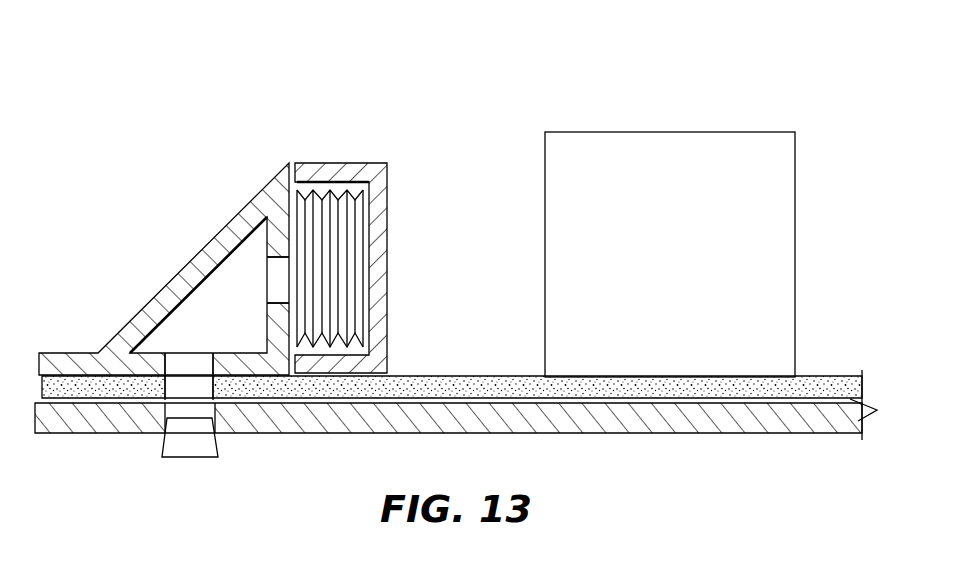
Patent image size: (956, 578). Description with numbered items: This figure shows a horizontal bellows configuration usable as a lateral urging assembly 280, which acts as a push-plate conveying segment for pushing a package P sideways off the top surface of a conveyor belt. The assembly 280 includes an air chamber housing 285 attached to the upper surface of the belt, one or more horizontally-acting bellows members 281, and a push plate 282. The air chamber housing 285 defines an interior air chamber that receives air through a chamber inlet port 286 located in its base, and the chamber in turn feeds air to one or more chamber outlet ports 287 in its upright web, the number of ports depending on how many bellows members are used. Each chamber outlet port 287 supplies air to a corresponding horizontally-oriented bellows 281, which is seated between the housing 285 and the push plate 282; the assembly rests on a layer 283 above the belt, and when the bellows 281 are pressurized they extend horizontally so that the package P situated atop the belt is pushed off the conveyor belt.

The lateral urging assembly 280 is at (470, 97).
The bellows member 281 is at (350, 230).
The push plate 282 is at (338, 178).
The compliant layer 283 is at (478, 385).
The air chamber housing 285 is at (185, 277).
The chamber inlet port 286 is at (188, 363).
The chamber outlet port 287 is at (278, 280).
The package P is at (675, 273).